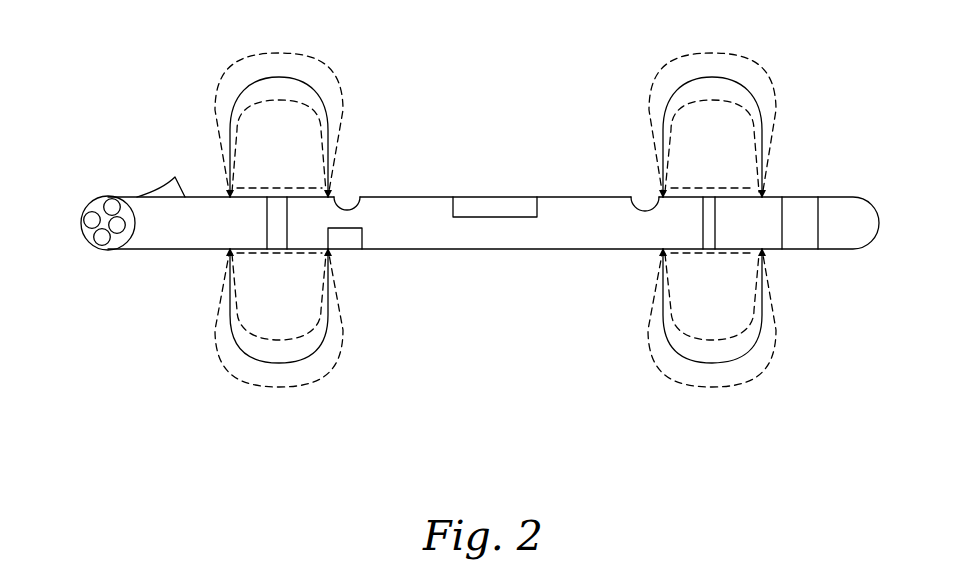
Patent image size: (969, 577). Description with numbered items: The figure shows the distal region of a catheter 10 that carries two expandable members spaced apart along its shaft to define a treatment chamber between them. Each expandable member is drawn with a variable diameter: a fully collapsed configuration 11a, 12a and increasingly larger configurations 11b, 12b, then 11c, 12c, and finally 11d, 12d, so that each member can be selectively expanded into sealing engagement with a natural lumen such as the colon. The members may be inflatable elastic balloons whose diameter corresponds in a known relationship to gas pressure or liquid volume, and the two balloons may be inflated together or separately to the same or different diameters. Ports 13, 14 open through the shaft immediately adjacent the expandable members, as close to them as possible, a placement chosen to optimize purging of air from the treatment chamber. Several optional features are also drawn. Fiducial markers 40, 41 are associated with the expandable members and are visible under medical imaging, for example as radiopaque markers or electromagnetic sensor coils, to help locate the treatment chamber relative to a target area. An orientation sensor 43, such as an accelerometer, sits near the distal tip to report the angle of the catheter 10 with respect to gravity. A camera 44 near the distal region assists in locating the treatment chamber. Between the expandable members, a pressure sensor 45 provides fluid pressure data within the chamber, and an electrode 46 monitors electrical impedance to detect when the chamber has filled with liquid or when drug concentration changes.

The catheter 10 is at (117, 280).
The fully collapsed configuration of expandable member 11a is at (698, 255).
The larger configuration of expandable member 11b is at (733, 337).
The larger configuration of expandable member 11c is at (727, 363).
The larger configuration of expandable member 11d is at (685, 387).
The fully collapsed configuration of expandable member 12a is at (267, 253).
The larger configuration of expandable member 12b is at (298, 335).
The larger configuration of expandable member 12c is at (252, 360).
The larger configuration of expandable member 12d is at (288, 388).
The port 13 is at (647, 187).
The port 14 is at (347, 183).
The fiducial marker 40 is at (267, 217).
The fiducial marker 41 is at (703, 218).
The orientation sensor 43 is at (795, 207).
The camera 44 is at (175, 177).
The pressure sensor 45 is at (488, 207).
The electrode 46 is at (353, 252).